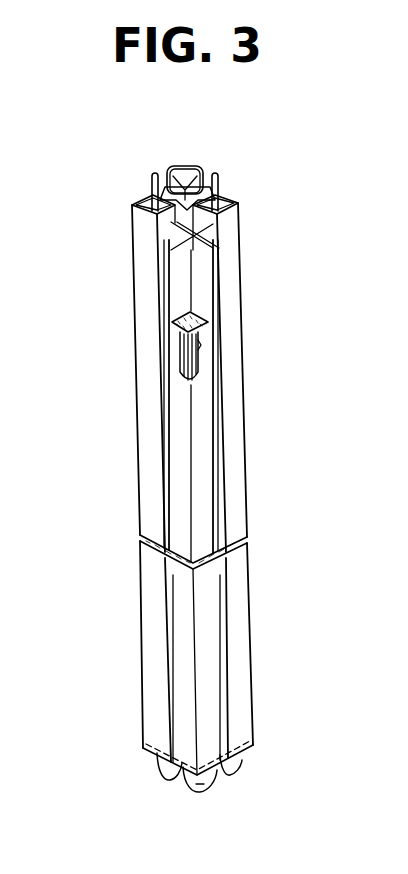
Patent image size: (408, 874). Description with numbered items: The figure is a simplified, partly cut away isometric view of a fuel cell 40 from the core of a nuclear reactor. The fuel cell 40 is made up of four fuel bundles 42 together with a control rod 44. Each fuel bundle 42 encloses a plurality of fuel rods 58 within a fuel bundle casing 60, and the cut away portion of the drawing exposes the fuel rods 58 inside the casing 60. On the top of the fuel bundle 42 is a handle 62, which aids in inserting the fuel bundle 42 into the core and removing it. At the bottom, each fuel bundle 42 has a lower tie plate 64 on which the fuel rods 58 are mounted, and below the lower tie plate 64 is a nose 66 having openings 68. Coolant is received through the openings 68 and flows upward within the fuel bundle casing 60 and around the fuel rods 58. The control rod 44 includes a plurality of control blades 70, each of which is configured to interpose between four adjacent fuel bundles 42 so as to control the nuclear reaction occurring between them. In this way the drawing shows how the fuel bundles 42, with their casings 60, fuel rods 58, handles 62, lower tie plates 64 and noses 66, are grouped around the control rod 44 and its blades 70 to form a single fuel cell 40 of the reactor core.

The fuel cell 40 is at (209, 155).
The fuel bundle 42 is at (252, 256).
The control rod 44 is at (145, 239).
The fuel rods 58 is at (182, 350).
The fuel bundle casing 60 is at (226, 197).
The handle 62 is at (155, 180).
The lower tie plate 64 is at (255, 748).
The nose 66 is at (198, 790).
The openings 68 is at (214, 792).
The control blades 70 is at (200, 297).